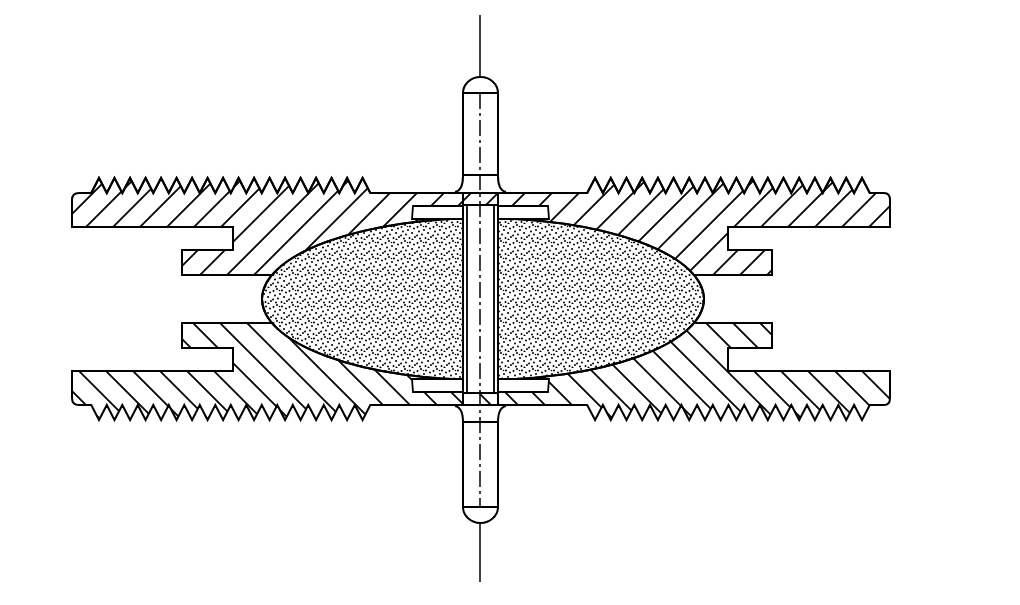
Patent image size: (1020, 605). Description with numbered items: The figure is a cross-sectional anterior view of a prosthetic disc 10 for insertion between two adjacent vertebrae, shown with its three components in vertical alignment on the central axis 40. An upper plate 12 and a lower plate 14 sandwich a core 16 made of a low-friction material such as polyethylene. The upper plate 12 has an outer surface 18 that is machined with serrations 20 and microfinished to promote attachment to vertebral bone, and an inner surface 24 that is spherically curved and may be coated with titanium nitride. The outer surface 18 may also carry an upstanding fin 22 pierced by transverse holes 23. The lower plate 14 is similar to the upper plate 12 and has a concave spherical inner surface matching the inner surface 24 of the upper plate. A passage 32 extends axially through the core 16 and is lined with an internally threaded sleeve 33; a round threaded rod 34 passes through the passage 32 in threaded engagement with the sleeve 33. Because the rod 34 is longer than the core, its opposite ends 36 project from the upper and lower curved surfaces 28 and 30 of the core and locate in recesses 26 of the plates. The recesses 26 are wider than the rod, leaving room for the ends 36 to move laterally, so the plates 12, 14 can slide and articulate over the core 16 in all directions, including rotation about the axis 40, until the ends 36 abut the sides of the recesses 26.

The prosthetic disc 10 is at (632, 137).
The upper plate 12 is at (82, 213).
The lower plate 14 is at (82, 387).
The core 16 is at (270, 300).
The outer surface 18 is at (281, 167).
The serrations 20 is at (738, 179).
The fin 22 is at (467, 87).
The transverse holes 23 is at (492, 126).
The inner surface 24 is at (327, 243).
The recesses 26 is at (527, 212).
The upper curved surface of core 28 is at (632, 246).
The lower curved surface of core 30 is at (622, 366).
The passage 32 is at (497, 313).
The internally threaded sleeve 33 is at (462, 292).
The threaded rod 34 is at (488, 260).
The rod ends 36 is at (500, 207).
The central axis 40 is at (476, 30).